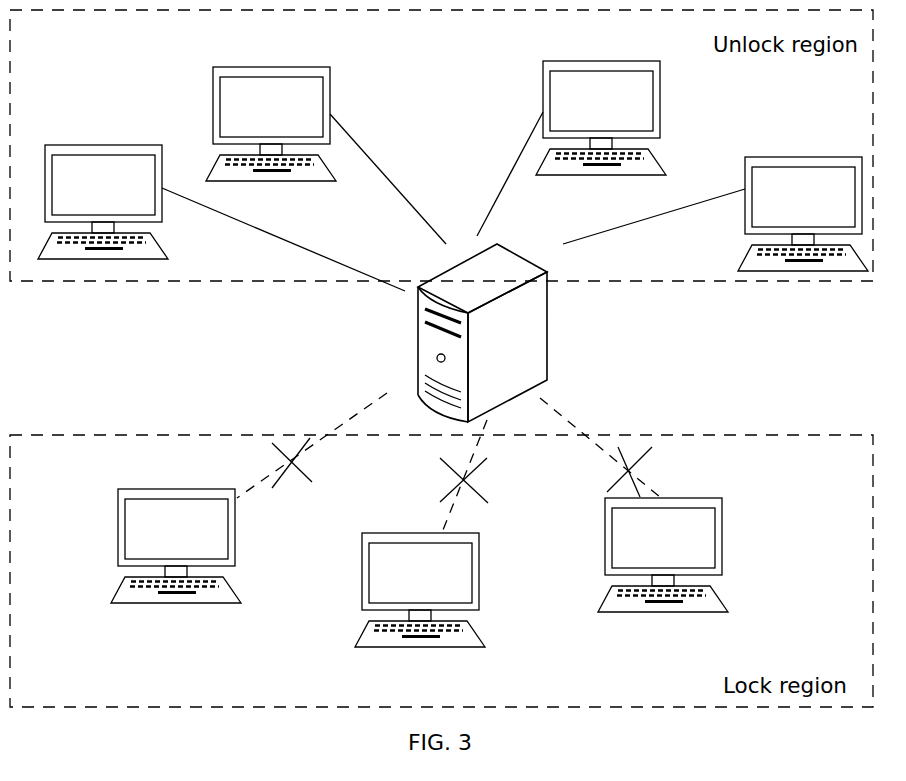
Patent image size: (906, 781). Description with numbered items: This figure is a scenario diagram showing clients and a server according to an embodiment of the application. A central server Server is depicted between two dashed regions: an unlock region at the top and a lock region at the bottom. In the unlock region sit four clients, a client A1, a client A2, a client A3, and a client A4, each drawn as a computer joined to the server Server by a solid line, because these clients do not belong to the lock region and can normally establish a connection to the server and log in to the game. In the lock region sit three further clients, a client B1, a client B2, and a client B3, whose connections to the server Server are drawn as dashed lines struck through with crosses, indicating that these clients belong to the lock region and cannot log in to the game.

The client A1 is at (103, 189).
The client A2 is at (271, 111).
The client A3 is at (601, 105).
The client A4 is at (803, 201).
The client B1 is at (176, 561).
The client B2 is at (420, 605).
The client B3 is at (663, 572).
The server Server is at (519, 333).